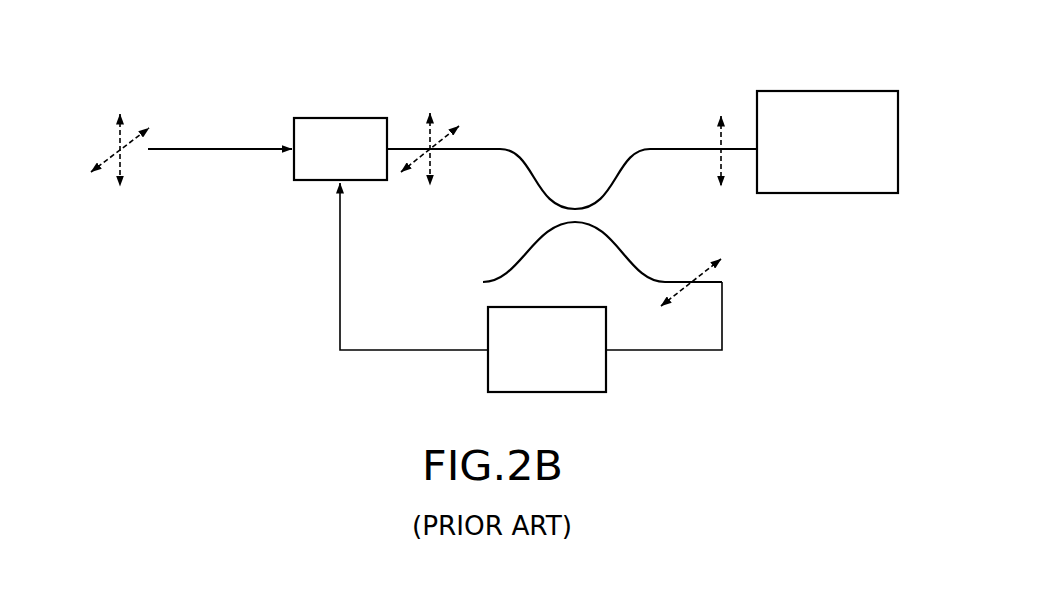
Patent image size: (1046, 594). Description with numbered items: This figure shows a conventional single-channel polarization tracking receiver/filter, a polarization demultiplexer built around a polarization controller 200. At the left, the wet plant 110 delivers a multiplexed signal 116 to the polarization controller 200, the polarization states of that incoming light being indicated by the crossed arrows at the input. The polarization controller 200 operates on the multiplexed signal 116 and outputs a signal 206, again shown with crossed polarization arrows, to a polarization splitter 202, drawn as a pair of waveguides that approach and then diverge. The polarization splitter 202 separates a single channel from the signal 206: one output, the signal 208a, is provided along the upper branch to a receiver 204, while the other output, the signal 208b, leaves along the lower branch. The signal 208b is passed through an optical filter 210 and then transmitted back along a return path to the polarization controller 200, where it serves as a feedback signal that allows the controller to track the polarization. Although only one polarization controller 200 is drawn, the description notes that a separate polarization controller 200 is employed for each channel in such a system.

The multiplexed signal 116 is at (136, 108).
The wet plant 110 is at (213, 111).
The polarization controller 200 is at (341, 118).
The signal 206 is at (456, 109).
The polarization splitter 202 is at (618, 212).
The signal 208a is at (727, 141).
The receiver 204 is at (828, 91).
The signal 208b is at (688, 296).
The optical filter 210 is at (606, 373).